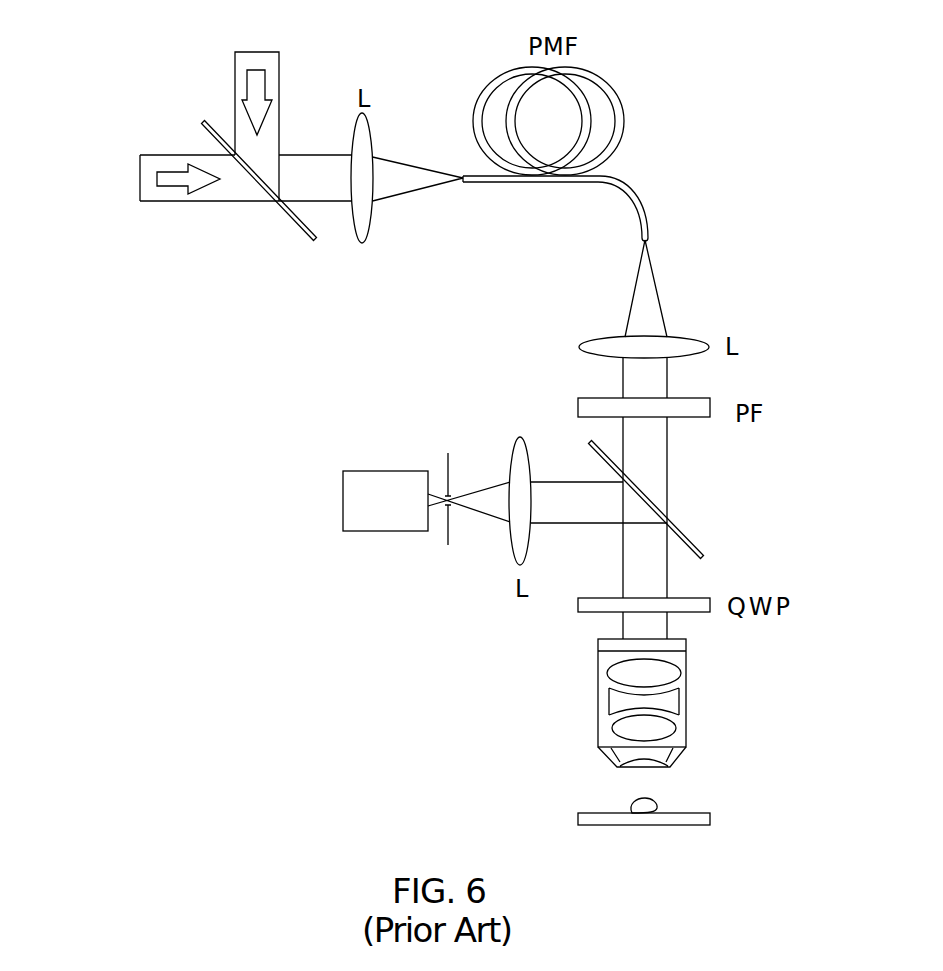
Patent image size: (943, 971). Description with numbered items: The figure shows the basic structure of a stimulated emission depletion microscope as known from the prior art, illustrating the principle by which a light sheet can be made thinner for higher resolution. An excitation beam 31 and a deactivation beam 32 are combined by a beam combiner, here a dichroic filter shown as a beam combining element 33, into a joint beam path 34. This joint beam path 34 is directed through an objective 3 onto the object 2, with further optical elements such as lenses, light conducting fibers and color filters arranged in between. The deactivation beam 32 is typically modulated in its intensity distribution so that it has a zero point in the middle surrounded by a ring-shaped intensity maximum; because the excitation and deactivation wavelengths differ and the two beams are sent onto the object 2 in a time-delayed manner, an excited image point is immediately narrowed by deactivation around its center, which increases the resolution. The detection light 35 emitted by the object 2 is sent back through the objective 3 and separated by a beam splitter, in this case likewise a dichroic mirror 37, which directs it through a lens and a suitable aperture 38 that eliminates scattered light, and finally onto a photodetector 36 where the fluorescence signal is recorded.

The excitation beam 31 is at (279, 52).
The deactivation beam 32 is at (240, 185).
The dichroic mirror 33 is at (290, 218).
The joint beam path 34 is at (313, 172).
The detection light 35 is at (560, 512).
The photodetector 36 is at (383, 532).
The dichroic mirror 37 is at (590, 443).
The aperture 38 is at (453, 507).
The objective 3 is at (686, 700).
The object 2 is at (657, 803).